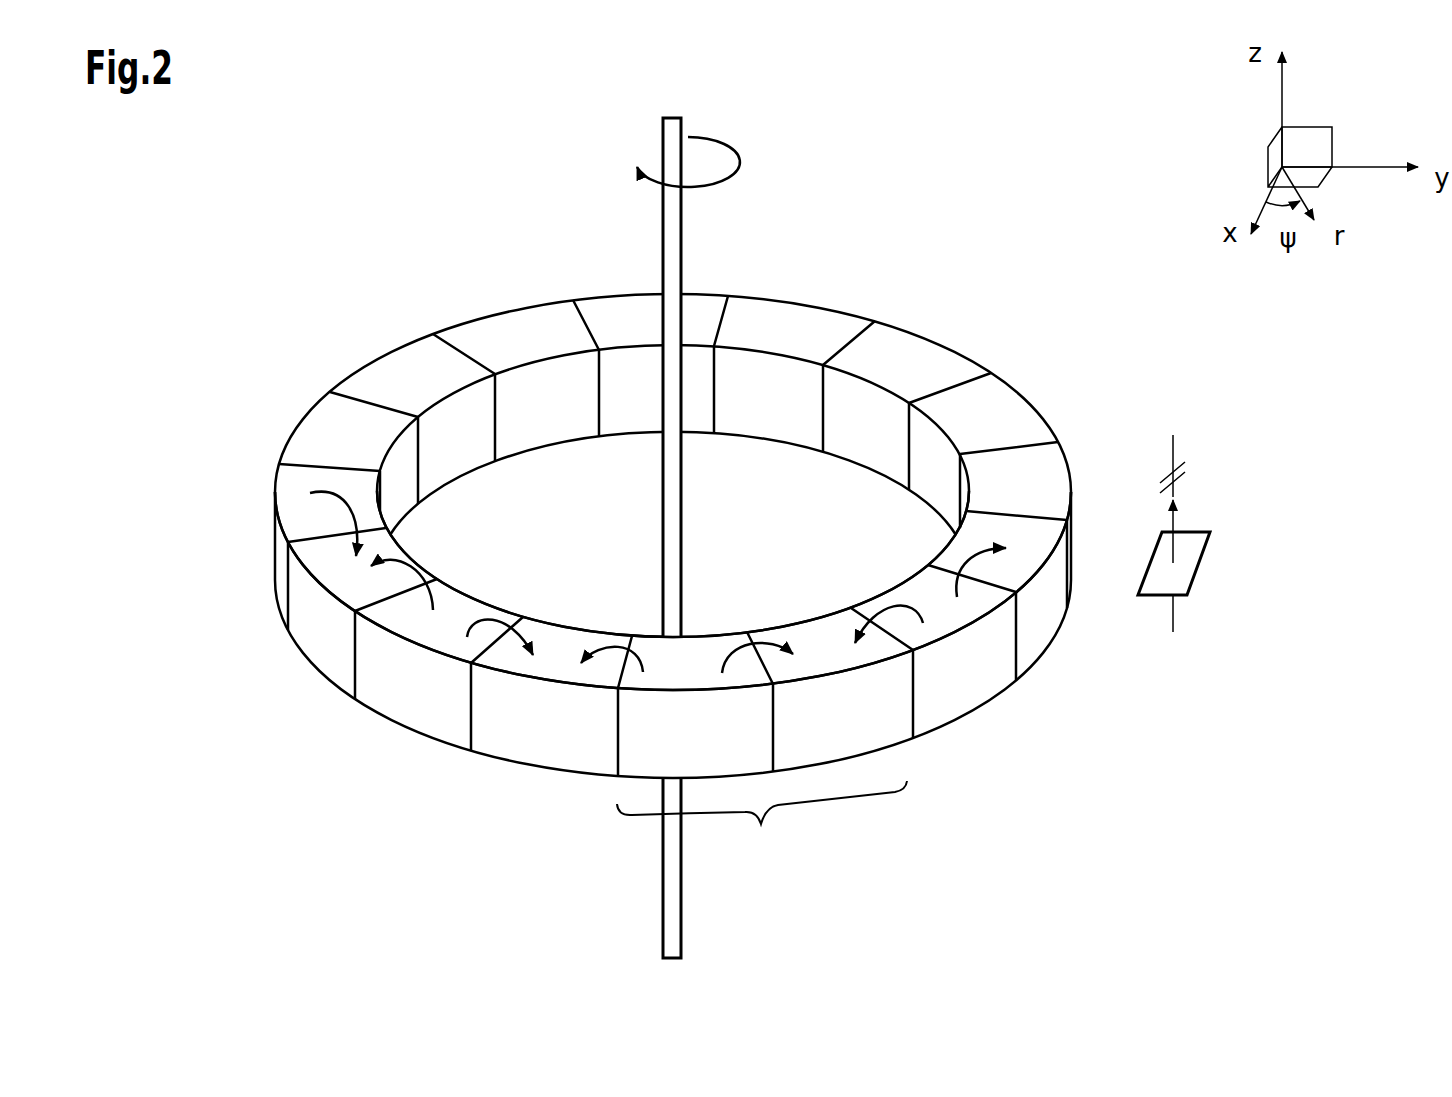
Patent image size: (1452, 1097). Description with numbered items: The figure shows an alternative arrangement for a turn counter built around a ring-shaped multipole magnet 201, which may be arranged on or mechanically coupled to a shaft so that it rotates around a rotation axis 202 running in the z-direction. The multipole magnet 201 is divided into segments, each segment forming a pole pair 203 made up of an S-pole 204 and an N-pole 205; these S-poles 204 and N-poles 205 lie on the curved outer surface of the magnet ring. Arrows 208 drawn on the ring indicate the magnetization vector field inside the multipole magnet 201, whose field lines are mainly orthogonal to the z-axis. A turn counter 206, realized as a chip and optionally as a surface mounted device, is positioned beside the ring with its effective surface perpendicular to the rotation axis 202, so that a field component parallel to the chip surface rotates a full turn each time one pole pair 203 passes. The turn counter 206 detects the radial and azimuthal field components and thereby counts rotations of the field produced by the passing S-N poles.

The multipole magnet 201 is at (284, 301).
The rotation axis 202 is at (688, 515).
The pole pair 203 is at (762, 830).
The S-pole 204 is at (633, 762).
The N-pole 205 is at (903, 723).
The turn counter 206 is at (1182, 578).
The arrows 208 is at (666, 589).